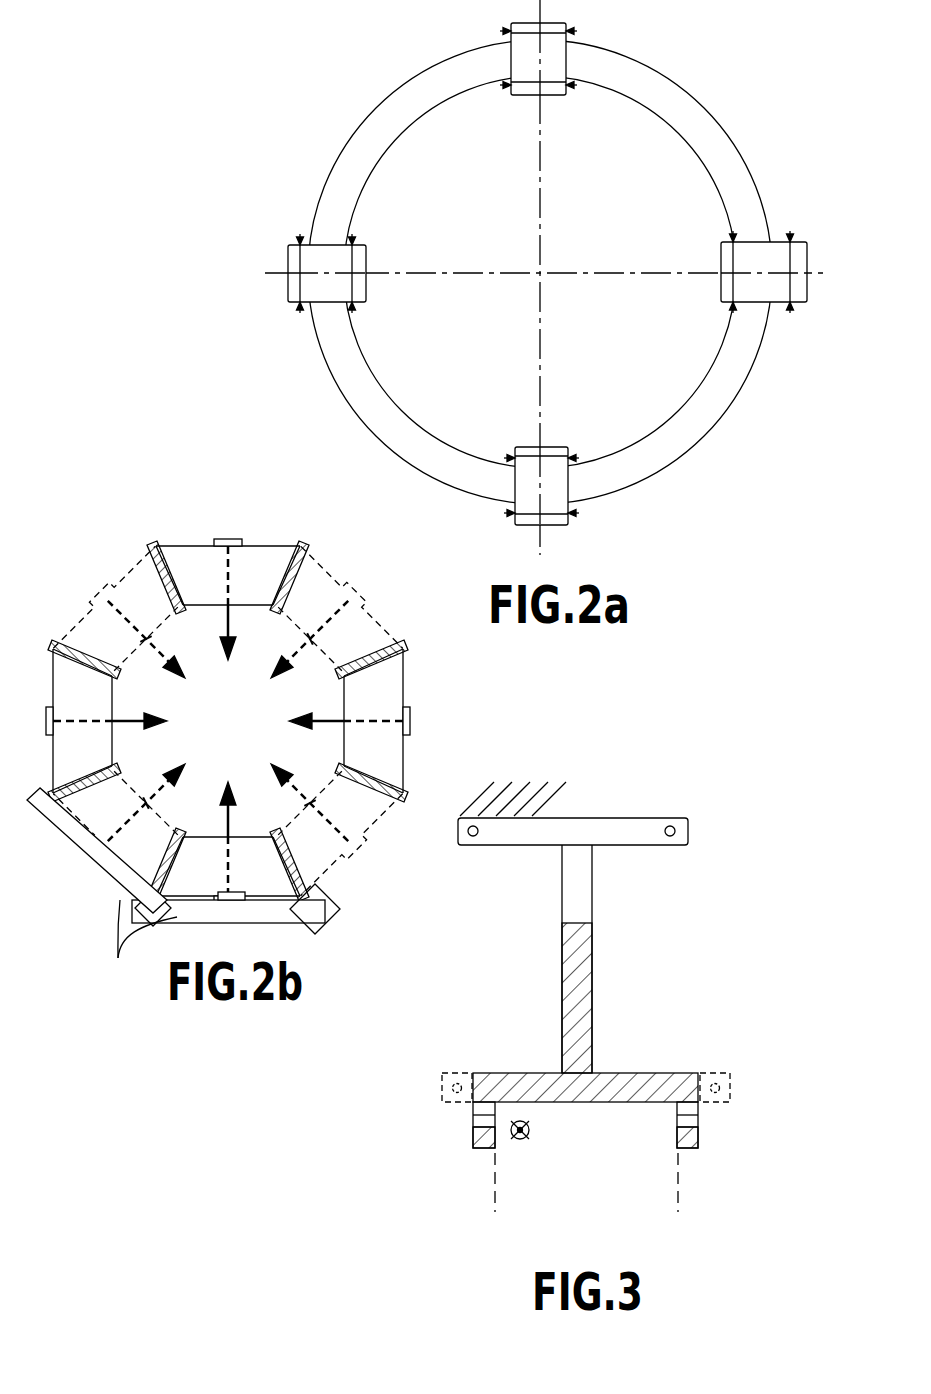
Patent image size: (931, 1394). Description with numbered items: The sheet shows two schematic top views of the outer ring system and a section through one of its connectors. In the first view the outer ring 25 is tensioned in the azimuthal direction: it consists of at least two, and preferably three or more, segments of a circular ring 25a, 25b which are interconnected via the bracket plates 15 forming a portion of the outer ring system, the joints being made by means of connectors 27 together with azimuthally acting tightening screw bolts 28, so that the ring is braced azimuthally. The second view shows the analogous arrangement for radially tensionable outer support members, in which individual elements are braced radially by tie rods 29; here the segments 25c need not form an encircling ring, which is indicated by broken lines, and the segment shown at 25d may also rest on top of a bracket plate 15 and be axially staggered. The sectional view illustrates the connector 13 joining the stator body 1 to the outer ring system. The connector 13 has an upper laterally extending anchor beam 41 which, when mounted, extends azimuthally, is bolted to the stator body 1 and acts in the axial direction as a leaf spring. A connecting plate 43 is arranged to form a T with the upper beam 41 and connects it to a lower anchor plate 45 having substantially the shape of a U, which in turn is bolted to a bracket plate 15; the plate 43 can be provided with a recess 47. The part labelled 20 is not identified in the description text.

In FIG. 3, the stator body 1 is at (515, 808).
In FIG. 3, the connector 13 is at (616, 975).
In FIG. 2B, the bracket plate 15 is at (335, 560).
In FIG. 3, the bracket plate 15 is at (667, 1185).
In FIG. 3, the clamp leg 20 is at (693, 1120).
In FIG. 2A, the outer ring 25 is at (554, 277).
In FIG. 2A, the segment of a circular ring 25a is at (675, 92).
In FIG. 2A, the segment of a circular ring 25b is at (720, 405).
In FIG. 2B, the segment 25c is at (274, 544).
In FIG. 2B, the segment 25d is at (183, 888).
In FIG. 2A, the connector 27 is at (800, 258).
In FIG. 2A, the tightening screw bolt 28 is at (727, 277).
In FIG. 2B, the tie rod 29 is at (273, 558).
In FIG. 3, the anchor beam 41 is at (615, 825).
In FIG. 3, the connecting plate 43 is at (582, 959).
In FIG. 3, the lower anchor plate 45 is at (595, 1098).
In FIG. 3, the recess 47 is at (570, 960).